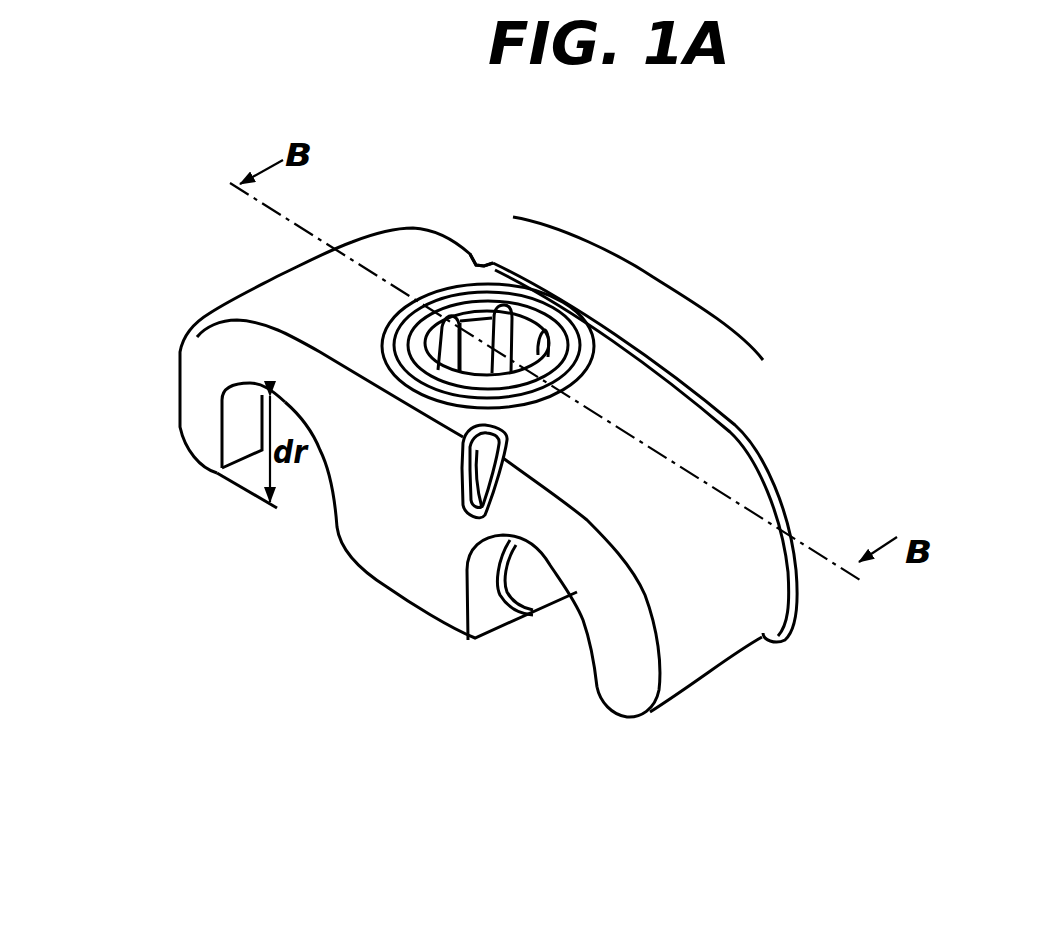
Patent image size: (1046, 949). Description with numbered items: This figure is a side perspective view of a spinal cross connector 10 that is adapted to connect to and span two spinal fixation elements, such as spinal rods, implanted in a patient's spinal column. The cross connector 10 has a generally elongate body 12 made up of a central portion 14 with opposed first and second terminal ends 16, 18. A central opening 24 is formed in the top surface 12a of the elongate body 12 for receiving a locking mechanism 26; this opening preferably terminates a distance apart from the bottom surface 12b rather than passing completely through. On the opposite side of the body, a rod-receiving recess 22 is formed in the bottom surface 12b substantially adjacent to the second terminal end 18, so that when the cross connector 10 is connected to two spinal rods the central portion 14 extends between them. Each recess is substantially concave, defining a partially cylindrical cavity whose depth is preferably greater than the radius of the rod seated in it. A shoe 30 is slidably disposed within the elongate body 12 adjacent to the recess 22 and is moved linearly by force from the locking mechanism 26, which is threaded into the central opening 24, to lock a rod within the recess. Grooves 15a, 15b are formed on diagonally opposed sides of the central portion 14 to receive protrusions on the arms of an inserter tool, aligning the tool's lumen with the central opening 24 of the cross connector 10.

The cross connector 10 is at (800, 253).
The elongate body 12 is at (412, 235).
The top surface 12a is at (702, 438).
The bottom surface 12b is at (433, 624).
The central portion 14 is at (638, 288).
The groove 15a is at (502, 258).
The groove 15b is at (485, 460).
The first terminal end 16 is at (155, 427).
The second terminal end 18 is at (598, 729).
The second rod-receiving recess 22 is at (565, 659).
The central opening 24 is at (400, 336).
The locking mechanism 26 is at (558, 350).
The second shoe 30 is at (547, 598).